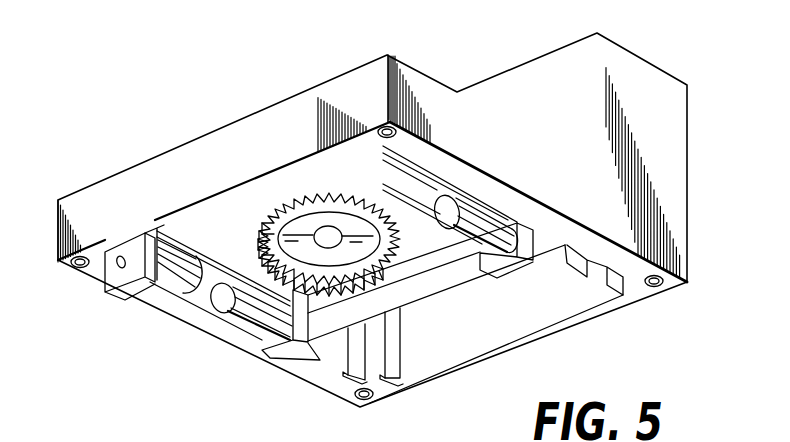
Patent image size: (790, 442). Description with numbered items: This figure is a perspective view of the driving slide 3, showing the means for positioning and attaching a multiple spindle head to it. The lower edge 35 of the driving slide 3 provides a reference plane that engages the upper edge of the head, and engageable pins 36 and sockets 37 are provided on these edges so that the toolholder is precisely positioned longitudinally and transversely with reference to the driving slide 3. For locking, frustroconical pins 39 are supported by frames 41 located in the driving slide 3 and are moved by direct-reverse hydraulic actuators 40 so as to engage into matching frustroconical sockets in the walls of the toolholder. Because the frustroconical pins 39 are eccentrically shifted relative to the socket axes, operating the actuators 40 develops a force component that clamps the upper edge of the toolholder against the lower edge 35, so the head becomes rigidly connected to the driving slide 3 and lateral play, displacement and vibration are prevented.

The driving slide 3 is at (488, 88).
The lower edge 35 is at (386, 287).
The engageable pins 36 is at (330, 317).
The sockets 37 is at (398, 130).
The frustroconical pins 39 is at (119, 269).
The direct-reverse hydraulic actuators 40 is at (180, 277).
The frames 41 is at (156, 238).